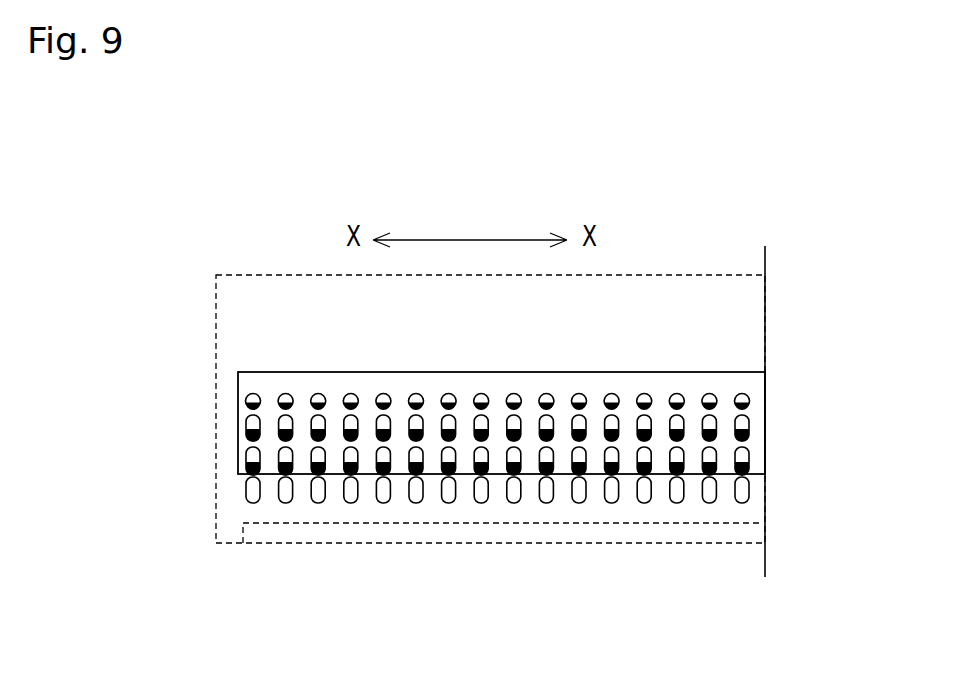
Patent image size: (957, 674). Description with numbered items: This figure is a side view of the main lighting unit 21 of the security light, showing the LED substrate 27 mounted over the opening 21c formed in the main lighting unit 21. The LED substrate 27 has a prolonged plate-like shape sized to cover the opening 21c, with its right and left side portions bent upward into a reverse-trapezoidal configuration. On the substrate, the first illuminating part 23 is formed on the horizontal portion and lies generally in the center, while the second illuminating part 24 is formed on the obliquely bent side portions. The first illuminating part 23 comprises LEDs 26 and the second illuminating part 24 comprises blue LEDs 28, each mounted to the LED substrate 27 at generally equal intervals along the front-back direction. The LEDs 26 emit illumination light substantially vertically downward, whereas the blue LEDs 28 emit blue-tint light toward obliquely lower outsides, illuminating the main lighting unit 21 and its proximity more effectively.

The main lighting unit 21 is at (205, 262).
The opening 21c is at (283, 548).
The first illuminating part 23 is at (443, 535).
The second illuminating part 24 is at (444, 387).
The LEDs 26 is at (500, 508).
The LED substrate 27 is at (238, 372).
The LEDs 28 is at (258, 462).